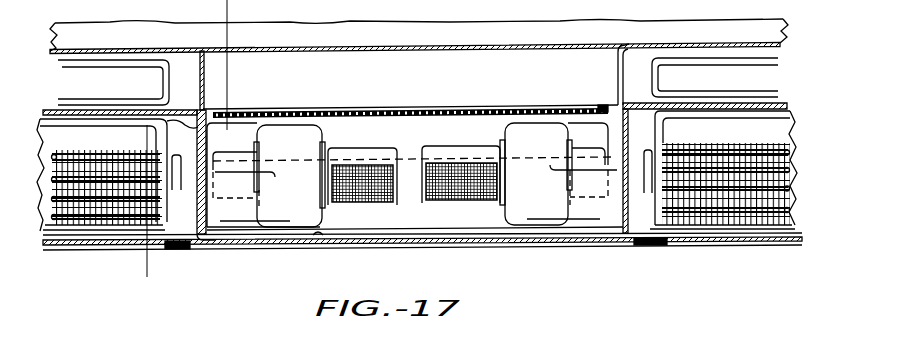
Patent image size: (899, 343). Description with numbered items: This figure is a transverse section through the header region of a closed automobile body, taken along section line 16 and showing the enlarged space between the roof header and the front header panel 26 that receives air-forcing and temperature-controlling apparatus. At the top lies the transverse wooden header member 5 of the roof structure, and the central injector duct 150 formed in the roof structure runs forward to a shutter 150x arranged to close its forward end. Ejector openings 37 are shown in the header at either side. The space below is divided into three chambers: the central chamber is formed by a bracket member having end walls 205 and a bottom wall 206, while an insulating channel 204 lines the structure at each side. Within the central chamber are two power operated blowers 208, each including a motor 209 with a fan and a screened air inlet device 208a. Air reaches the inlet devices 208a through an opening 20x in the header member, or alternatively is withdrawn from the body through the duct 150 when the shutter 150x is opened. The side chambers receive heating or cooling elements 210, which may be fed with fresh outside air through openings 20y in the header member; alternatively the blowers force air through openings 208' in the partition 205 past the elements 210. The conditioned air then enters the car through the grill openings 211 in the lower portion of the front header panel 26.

The transverse wooden header member 5 is at (454, 28).
The section line 16- 16 is at (214, 8).
The ejector openings 37 is at (100, 66).
The injector duct 150 is at (414, 77).
The shutter 150x is at (452, 111).
The opening 20x is at (414, 159).
The openings 20y is at (87, 172).
The insulating channel 204 is at (664, 70).
The end walls 205 is at (201, 247).
The bottom wall 206 is at (318, 238).
The power operated blowers 208 is at (413, 175).
The air inlet devices 208a is at (344, 202).
The openings in the partition 208' is at (427, 212).
The motors 209 is at (247, 155).
The heating or cooling elements 210 is at (93, 222).
The grill openings 211 is at (121, 252).
The front header panel 26 is at (432, 243).